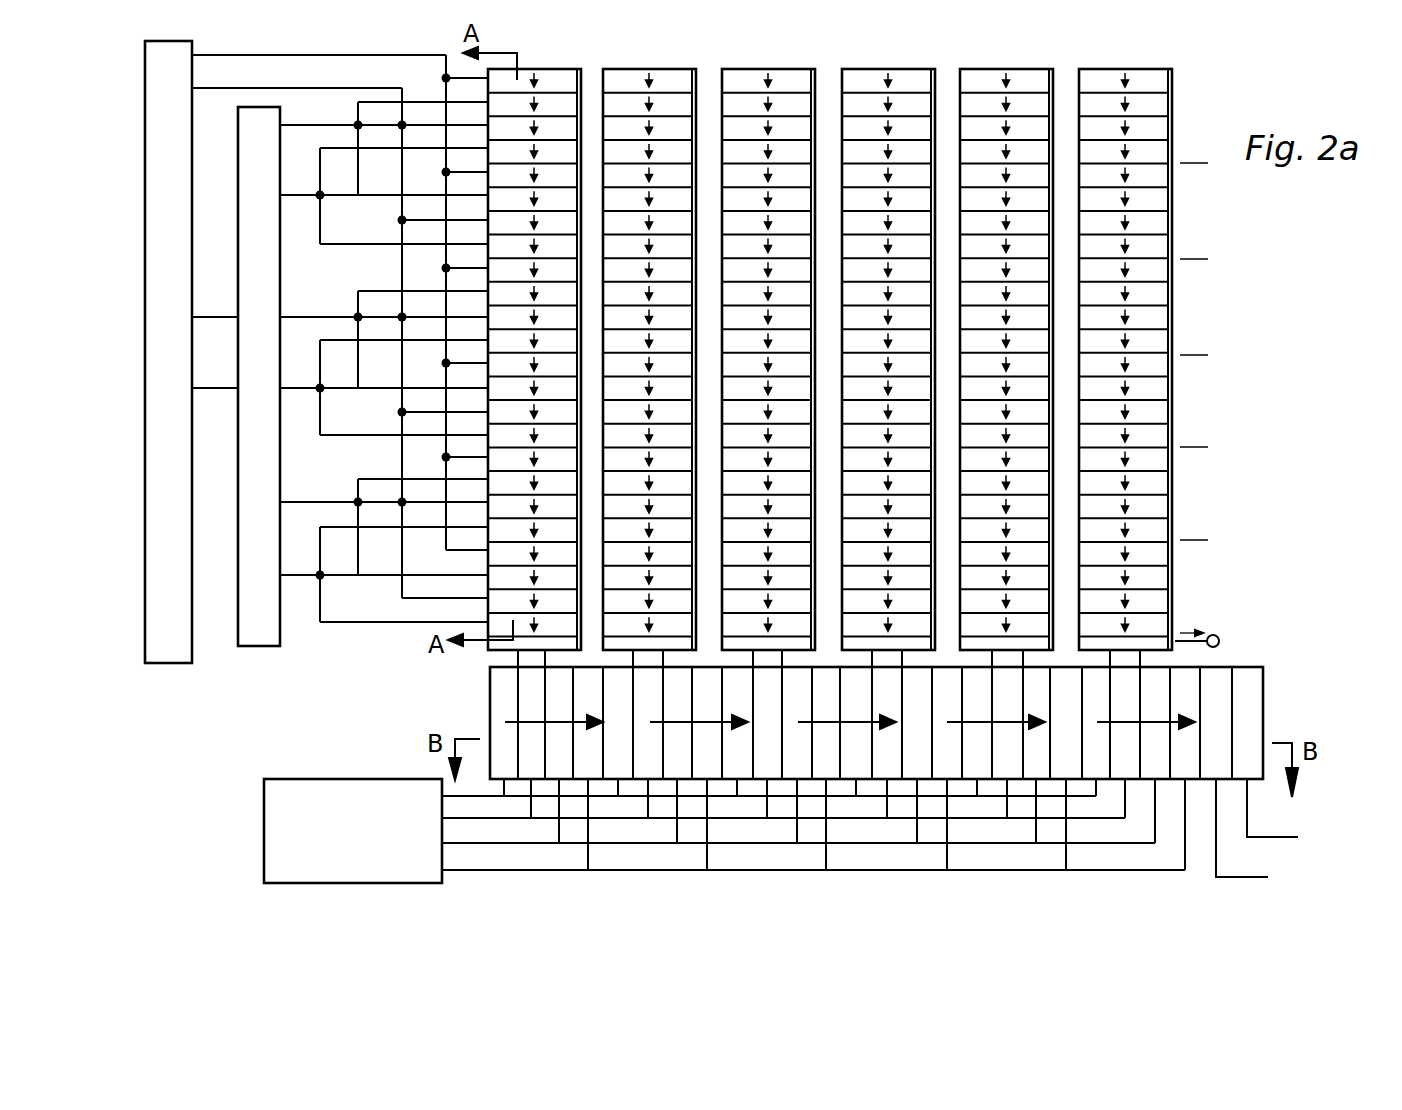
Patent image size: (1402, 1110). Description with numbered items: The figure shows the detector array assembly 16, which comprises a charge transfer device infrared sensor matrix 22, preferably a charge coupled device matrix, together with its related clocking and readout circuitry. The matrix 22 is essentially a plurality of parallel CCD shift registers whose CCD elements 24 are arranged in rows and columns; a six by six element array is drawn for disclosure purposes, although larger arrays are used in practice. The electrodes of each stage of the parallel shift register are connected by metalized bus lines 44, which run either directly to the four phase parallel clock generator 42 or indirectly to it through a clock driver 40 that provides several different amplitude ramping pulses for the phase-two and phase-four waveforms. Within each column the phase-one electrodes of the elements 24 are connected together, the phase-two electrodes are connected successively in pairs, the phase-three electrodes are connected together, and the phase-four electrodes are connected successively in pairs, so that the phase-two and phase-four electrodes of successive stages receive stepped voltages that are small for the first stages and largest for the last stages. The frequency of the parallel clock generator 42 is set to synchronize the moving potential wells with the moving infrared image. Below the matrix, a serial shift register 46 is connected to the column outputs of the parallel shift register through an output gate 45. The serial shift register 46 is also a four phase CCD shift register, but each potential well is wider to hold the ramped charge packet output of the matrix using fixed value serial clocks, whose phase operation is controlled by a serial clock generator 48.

The detector array assembly 16 is at (891, 338).
The charge transfer device infrared sensor matrix 22 is at (1180, 347).
The CCD element 24 is at (614, 73).
The clock driver 40 is at (277, 370).
The four phase parallel clock generator 42 is at (295, 346).
The metalized bus lines 44 is at (303, 88).
The output gate 45 is at (1257, 644).
The serial shift register 46 is at (490, 704).
The serial clock generator 48 is at (264, 808).